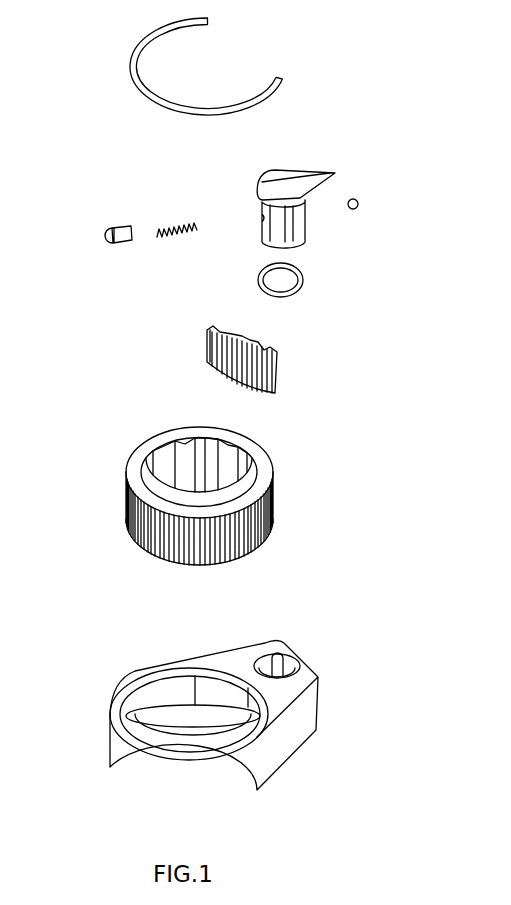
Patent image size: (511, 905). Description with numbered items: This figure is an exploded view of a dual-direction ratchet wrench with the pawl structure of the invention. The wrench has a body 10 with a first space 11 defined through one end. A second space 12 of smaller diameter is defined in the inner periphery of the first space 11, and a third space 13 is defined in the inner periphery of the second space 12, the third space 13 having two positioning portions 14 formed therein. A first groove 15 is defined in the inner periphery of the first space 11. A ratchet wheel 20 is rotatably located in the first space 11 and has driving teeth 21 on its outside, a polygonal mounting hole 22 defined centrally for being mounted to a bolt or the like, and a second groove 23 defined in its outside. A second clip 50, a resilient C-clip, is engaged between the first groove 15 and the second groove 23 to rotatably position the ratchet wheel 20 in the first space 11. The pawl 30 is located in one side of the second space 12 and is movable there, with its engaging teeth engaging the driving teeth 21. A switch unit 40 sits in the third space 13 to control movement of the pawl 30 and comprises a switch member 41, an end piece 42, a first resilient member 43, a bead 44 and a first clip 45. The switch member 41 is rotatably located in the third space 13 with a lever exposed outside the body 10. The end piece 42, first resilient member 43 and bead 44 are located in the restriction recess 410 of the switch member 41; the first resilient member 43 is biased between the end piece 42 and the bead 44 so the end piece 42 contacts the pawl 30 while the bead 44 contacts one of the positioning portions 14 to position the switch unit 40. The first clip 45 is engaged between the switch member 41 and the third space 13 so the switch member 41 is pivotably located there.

The body 10 is at (202, 707).
The first space 11 is at (140, 700).
The second space 12 is at (213, 685).
The third space 13 is at (255, 660).
The positioning portions 14 is at (277, 652).
The first groove 15 is at (152, 675).
The ratchet wheel 20 is at (185, 483).
The driving teeth 21 is at (126, 517).
The mounting hole 22 is at (173, 455).
The second groove 23 is at (128, 482).
The pawl 30 is at (218, 330).
The switch unit 40 is at (403, 238).
The switch member 41 is at (277, 190).
The restriction recess 410 is at (263, 213).
The end piece 42 is at (102, 240).
The first resilient member 43 is at (163, 225).
The bead 44 is at (360, 202).
The first clip 45 is at (303, 282).
The second clip 50 is at (137, 50).